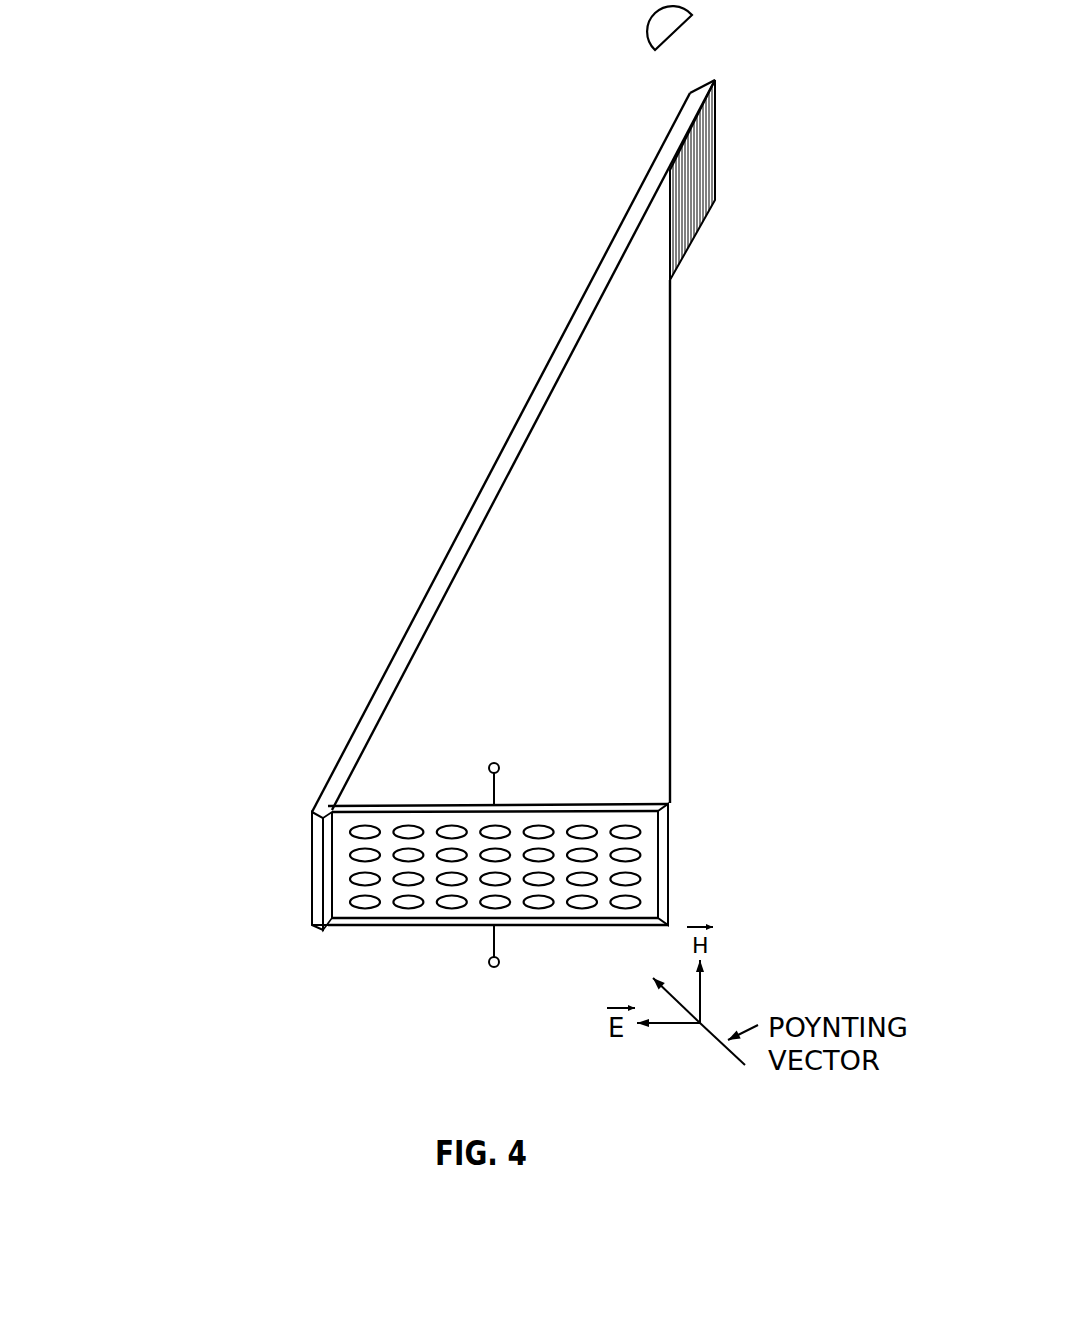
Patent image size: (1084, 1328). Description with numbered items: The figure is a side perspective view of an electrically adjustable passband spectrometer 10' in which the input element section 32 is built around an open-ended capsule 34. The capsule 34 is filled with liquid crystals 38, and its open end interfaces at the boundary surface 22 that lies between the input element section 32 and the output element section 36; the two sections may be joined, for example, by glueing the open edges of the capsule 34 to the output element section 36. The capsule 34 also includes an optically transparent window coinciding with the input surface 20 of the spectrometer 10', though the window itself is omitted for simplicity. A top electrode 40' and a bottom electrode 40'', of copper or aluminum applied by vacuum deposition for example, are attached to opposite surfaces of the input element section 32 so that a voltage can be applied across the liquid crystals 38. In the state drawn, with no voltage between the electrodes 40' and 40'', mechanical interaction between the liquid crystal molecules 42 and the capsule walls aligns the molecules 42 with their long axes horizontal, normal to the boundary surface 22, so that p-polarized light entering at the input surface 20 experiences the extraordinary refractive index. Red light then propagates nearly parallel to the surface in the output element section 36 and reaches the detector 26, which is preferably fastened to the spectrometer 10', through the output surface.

The detector 26 is at (668, 22).
The spectrometer 10' is at (499, 591).
The output element section 36 is at (500, 463).
The input element section 32 is at (772, 441).
The top electrode 40' is at (779, 541).
The liquid crystals 38 is at (516, 841).
The capsule 34 is at (493, 934).
The liquid crystal molecules 42 is at (379, 844).
The input surface 20 is at (385, 894).
The boundary surface 22 is at (318, 928).
The bottom electrode 40'' is at (495, 1010).